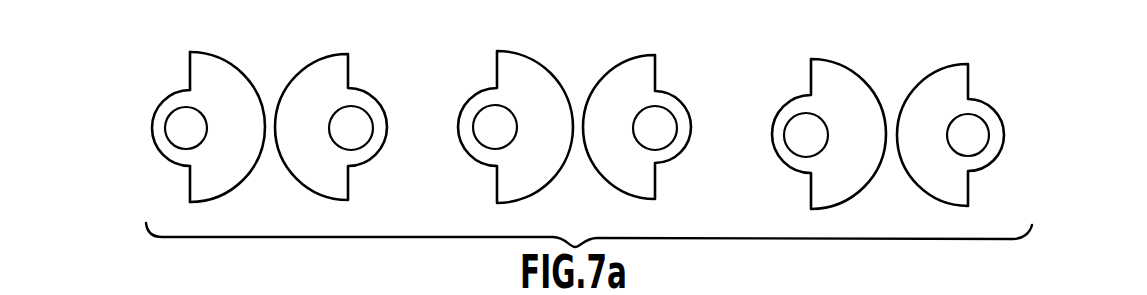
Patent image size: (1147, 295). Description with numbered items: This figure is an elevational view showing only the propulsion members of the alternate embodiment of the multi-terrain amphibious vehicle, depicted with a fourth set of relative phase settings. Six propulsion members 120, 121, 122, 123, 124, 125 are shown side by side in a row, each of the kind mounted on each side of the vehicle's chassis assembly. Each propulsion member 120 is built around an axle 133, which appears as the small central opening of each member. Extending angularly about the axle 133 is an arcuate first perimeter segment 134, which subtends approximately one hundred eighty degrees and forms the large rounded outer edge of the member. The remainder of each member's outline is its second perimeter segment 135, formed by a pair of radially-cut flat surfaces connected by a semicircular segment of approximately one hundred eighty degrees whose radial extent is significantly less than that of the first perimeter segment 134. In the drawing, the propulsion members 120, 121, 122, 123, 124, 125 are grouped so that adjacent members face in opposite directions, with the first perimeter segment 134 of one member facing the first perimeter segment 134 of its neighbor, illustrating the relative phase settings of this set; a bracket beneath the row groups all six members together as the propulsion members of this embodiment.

The propulsion member 120 is at (182, 108).
The propulsion member 121 is at (337, 77).
The propulsion member 122 is at (532, 74).
The propulsion member 123 is at (643, 77).
The propulsion member 124 is at (843, 87).
The propulsion member 125 is at (955, 88).
The axle 133 is at (183, 125).
The first perimeter segment 134 is at (240, 70).
The second perimeter segment 135 is at (158, 103).